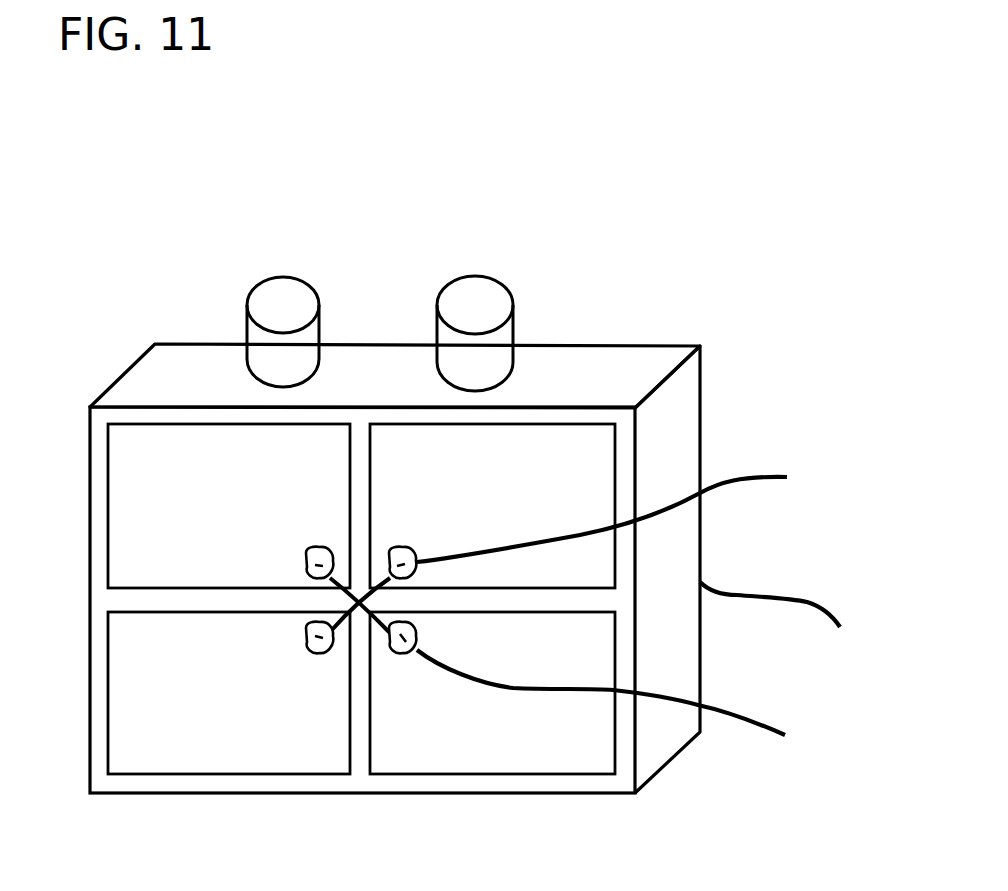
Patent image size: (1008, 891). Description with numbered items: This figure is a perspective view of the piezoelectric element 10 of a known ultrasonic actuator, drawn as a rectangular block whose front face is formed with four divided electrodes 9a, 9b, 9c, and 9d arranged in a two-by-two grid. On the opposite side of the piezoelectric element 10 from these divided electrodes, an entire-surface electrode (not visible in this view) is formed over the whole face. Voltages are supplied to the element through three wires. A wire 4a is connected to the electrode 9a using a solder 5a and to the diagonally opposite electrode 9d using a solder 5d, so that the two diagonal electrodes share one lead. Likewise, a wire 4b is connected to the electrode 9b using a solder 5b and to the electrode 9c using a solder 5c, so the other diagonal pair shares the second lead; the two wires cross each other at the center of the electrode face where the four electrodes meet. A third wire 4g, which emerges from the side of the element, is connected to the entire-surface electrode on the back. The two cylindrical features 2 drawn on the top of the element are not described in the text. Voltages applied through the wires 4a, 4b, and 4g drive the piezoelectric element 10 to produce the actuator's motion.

The piezoelectric element 10 is at (173, 373).
The terminals 2 is at (478, 298).
The electrode 9a is at (583, 468).
The electrode 9b is at (520, 747).
The electrode 9c is at (148, 474).
The electrode 9d is at (240, 742).
The solder 5a is at (410, 553).
The solder 5b is at (403, 645).
The solder 5c is at (306, 565).
The solder 5d is at (304, 643).
The wire 4a is at (757, 474).
The wire 4b is at (757, 723).
The wire 4g is at (820, 605).